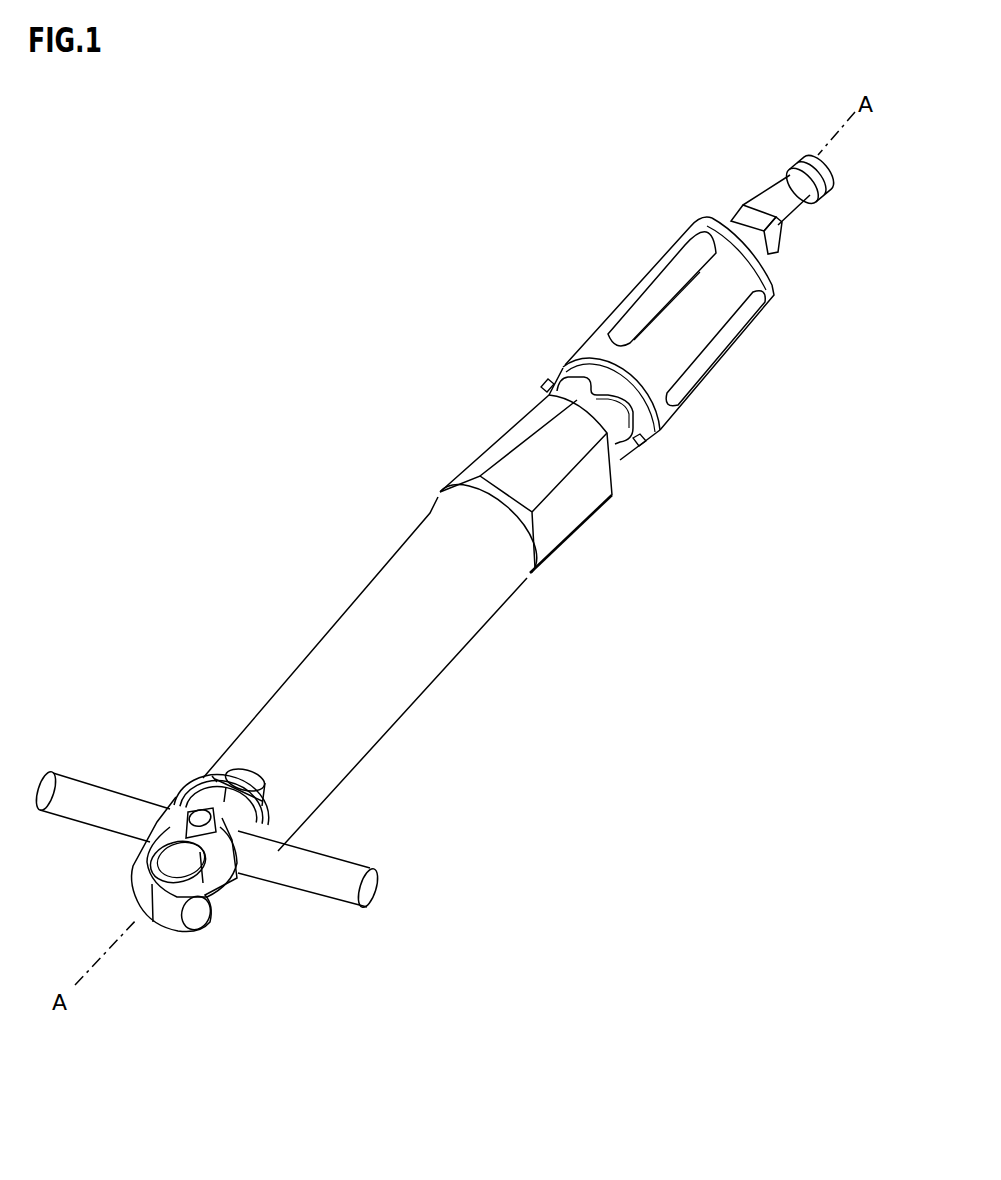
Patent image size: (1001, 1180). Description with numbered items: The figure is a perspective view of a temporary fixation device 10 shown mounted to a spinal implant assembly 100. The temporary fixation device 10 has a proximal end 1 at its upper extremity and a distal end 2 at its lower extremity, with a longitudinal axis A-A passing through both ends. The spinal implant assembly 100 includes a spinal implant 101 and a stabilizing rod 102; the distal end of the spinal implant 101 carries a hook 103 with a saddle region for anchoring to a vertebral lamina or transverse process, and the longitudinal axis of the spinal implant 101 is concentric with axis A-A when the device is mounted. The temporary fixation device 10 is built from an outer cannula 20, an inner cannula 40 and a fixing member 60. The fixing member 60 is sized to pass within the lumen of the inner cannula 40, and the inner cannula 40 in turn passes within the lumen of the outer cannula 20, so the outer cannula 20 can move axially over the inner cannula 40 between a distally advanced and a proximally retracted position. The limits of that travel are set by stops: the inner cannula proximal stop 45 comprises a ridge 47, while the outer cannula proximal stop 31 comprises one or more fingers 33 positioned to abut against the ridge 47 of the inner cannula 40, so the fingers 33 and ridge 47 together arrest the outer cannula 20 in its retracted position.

The proximal end 1 is at (690, 153).
The distal end 2 is at (128, 720).
The temporary fixation device 10 is at (378, 338).
The outer cannula 20 is at (420, 697).
The outer cannula proximal stop 31 is at (634, 451).
The fingers 33 is at (576, 384).
The inner cannula 40 is at (777, 304).
The inner cannula proximal stop 45 is at (648, 443).
The ridge 47 is at (550, 387).
The fixing member 60 is at (800, 227).
The spinal implant assembly 100 is at (434, 862).
The spinal implant 101 is at (157, 848).
The stabilizing rod 102 is at (333, 857).
The hook 103 is at (212, 897).